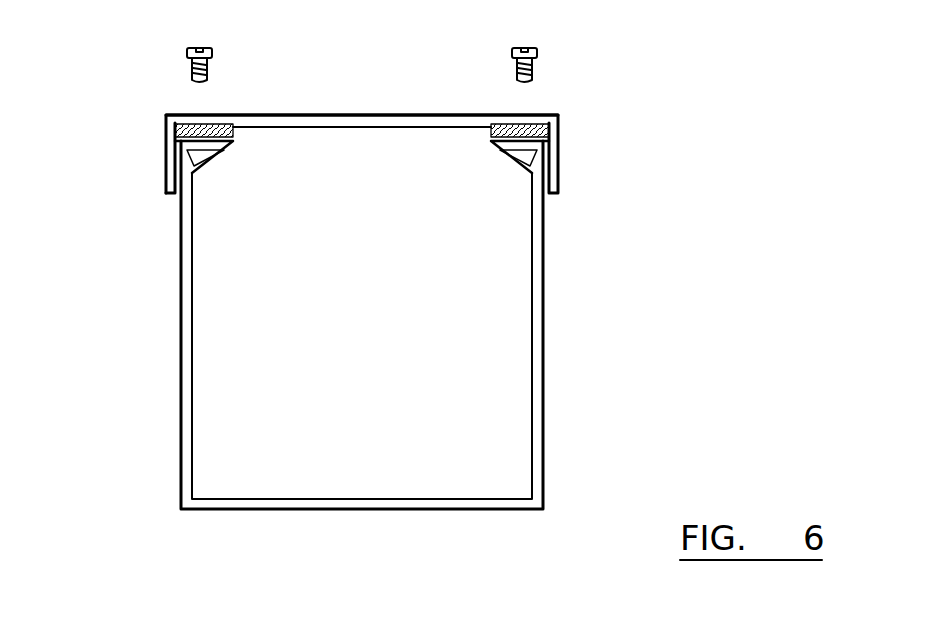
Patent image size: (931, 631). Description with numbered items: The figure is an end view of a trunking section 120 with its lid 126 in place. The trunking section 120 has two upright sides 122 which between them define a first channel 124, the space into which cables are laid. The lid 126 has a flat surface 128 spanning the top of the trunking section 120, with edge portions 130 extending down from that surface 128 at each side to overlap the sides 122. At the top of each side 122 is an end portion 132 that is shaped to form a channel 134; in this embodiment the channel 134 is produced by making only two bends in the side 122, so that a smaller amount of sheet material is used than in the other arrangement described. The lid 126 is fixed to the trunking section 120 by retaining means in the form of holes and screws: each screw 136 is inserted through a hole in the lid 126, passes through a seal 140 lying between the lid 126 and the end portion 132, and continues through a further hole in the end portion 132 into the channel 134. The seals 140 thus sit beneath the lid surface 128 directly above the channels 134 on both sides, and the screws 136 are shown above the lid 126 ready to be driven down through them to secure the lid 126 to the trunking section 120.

The trunking section 120 is at (370, 305).
The side 122 is at (186, 372).
The first channel 124 is at (262, 418).
The lid 126 is at (321, 113).
The surface 128 is at (421, 122).
The edge portion 130 is at (170, 182).
The end portion 132 is at (242, 170).
The channel 134 is at (183, 158).
The screw 136 is at (188, 52).
The seal 140 is at (186, 130).